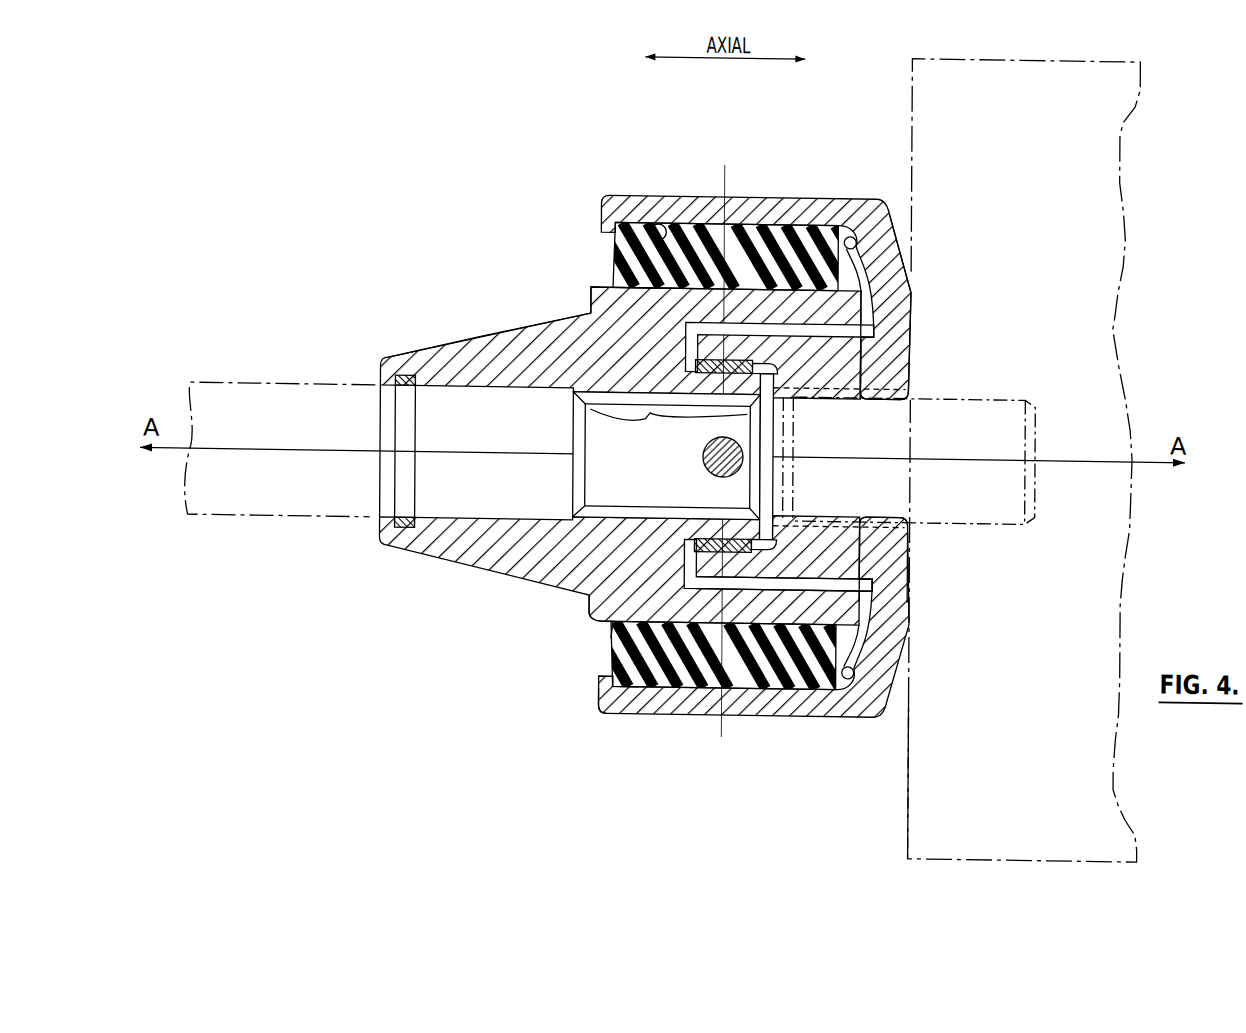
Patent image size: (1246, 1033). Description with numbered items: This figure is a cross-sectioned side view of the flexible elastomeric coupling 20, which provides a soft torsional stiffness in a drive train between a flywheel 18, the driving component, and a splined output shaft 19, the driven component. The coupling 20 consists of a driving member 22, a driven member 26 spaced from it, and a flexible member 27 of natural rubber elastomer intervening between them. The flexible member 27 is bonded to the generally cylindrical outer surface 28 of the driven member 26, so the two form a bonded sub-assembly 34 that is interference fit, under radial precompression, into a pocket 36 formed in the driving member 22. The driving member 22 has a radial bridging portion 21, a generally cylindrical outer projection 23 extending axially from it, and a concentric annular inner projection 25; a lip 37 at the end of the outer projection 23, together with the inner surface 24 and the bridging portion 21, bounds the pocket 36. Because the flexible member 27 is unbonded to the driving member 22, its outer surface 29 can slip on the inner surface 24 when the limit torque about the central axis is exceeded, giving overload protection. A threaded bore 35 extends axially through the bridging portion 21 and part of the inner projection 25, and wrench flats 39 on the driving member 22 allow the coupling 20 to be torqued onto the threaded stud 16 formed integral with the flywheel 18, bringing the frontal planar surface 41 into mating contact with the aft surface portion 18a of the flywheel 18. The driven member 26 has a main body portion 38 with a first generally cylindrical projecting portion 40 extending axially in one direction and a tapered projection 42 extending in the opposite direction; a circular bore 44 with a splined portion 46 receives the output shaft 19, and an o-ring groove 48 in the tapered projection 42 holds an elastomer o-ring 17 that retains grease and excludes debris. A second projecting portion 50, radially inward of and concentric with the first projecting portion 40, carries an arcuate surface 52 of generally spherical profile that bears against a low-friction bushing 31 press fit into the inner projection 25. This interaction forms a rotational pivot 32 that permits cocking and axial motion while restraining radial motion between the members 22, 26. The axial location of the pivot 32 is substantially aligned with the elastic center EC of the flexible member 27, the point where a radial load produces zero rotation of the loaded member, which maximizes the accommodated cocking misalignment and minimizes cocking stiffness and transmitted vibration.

The threaded stud 16 is at (940, 394).
The o-ring 17 is at (406, 537).
The flywheel 18 is at (920, 857).
The aft surface portion 18a is at (910, 789).
The output shaft 19 is at (216, 524).
The flexible elastomeric coupling 20 is at (776, 436).
The radial bridging portion 21 is at (892, 548).
The driving member 22 is at (912, 299).
The outer projection 23 is at (659, 198).
The inner surface 24 is at (609, 249).
The inner projection 25 is at (763, 590).
The driven member 26 is at (506, 329).
The flexible member 27 is at (788, 683).
The outer surface 28 is at (614, 646).
The outer surface 29 is at (635, 692).
The low-friction bushing 31 is at (860, 332).
The rotational pivot 32 is at (683, 369).
The bonded sub-assembly 34 is at (582, 616).
The threaded bore 35 is at (873, 398).
The pocket 36 is at (853, 241).
The lip 37 is at (601, 669).
The main body portion 38 is at (614, 327).
The wrench flats 39 is at (744, 718).
The first projecting portion 40 is at (840, 628).
The frontal planar surface 41 is at (906, 576).
The tapered projection 42 is at (469, 353).
The circular bore 44 is at (461, 391).
The splined portion 46 is at (642, 437).
The o-ring groove 48 is at (399, 475).
The second projecting portion 50 is at (757, 536).
The arcuate surface 52 is at (770, 366).
The Elastic Center EC is at (707, 473).